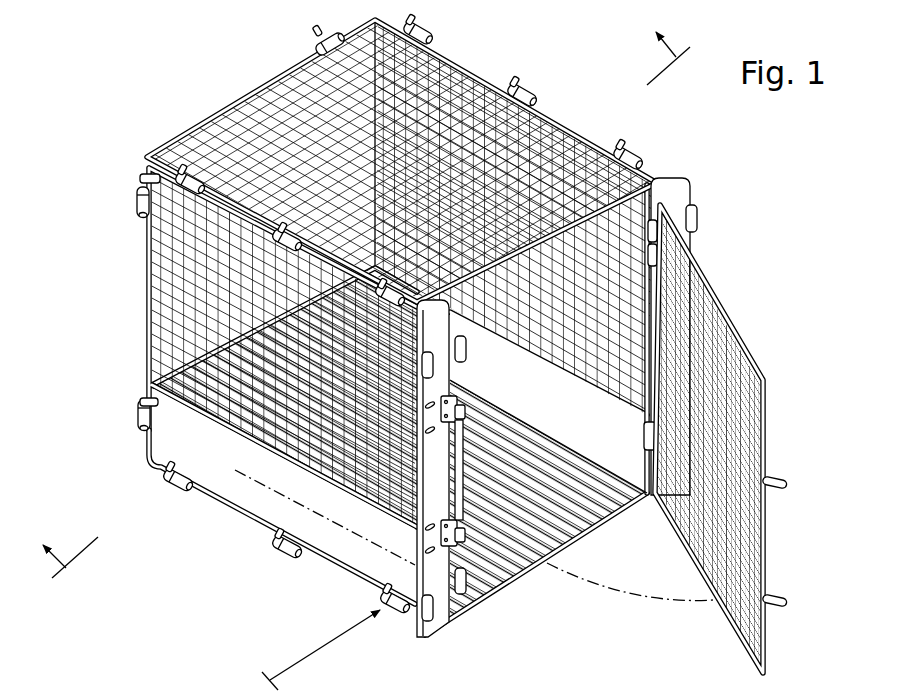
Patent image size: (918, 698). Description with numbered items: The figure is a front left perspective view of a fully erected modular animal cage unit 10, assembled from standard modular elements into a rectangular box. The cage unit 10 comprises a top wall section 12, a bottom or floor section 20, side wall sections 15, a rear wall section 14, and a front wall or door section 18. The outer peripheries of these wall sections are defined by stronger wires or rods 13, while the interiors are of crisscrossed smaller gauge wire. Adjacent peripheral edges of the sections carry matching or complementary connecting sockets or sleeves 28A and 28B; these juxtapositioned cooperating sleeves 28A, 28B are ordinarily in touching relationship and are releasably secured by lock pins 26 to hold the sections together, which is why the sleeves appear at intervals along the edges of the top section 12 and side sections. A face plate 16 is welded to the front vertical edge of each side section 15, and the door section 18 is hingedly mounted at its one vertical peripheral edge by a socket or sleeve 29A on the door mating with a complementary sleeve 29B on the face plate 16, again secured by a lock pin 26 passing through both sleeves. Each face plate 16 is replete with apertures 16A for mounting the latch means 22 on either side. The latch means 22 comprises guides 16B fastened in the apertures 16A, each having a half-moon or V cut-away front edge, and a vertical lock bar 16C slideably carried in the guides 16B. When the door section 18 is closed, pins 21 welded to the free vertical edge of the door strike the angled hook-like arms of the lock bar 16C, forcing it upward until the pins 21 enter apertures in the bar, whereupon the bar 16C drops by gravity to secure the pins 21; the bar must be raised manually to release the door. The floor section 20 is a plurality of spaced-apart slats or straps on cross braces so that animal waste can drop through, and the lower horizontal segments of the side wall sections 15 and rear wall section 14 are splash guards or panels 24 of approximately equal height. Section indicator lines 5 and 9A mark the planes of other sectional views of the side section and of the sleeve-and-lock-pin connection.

The modular animal cage unit 10 is at (130, 130).
The top wall section 12 is at (250, 82).
The outer peripheral rods or wires 13 is at (292, 62).
The rear wall section 14 is at (140, 280).
The side wall section 15 is at (610, 297).
The face plate 16 is at (415, 633).
The apertures 16A is at (432, 398).
The guides 16B is at (440, 530).
The vertical lock bar 16C is at (456, 461).
The door section 18 is at (751, 329).
The floor section 20 is at (505, 562).
The pin 21 is at (790, 482).
The latch means 22 is at (450, 562).
The splash guard 24 is at (252, 490).
The lock pin 26 is at (155, 466).
The connecting sleeve 28A is at (415, 30).
The complementary connecting sleeve 28B is at (432, 38).
The door hinge sleeve 29A is at (645, 434).
The face plate hinge sleeve 29B is at (700, 220).
The section line 5 is at (372, 315).
The section line 9A is at (309, 654).